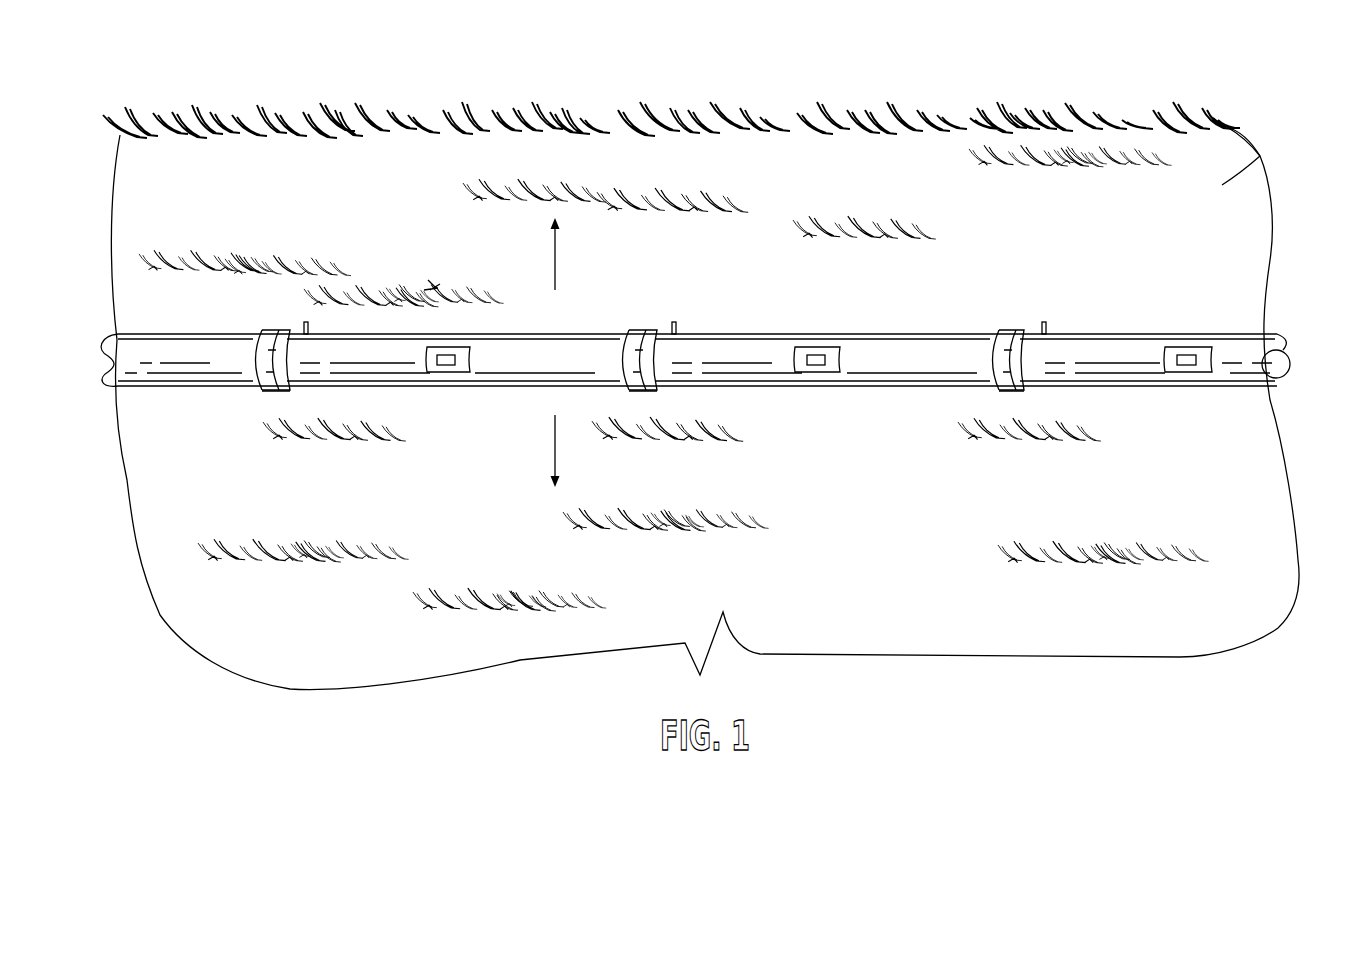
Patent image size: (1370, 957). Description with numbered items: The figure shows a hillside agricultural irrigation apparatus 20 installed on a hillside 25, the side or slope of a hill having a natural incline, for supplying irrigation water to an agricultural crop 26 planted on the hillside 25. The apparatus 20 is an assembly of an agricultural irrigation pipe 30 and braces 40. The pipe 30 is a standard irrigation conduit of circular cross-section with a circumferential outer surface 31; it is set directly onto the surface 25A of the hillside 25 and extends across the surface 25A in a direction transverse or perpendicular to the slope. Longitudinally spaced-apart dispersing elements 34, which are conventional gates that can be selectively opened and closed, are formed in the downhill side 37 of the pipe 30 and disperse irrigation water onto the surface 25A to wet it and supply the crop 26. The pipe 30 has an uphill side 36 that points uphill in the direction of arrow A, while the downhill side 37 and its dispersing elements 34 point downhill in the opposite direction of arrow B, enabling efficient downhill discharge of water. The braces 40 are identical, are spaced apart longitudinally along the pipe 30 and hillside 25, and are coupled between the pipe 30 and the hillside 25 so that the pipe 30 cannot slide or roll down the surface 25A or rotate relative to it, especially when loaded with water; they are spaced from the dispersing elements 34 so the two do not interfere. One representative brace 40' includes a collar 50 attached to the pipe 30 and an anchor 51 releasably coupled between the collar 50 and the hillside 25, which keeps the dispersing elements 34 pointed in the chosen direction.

The hillside agricultural irrigation apparatus 20 is at (992, 276).
The hillside 25 is at (1277, 232).
The surface of hillside 25A is at (1260, 156).
The agricultural crop 26 is at (338, 550).
The agricultural irrigation pipe 30 is at (152, 390).
The circumferential outer surface 31 is at (205, 348).
The dispersing elements 34 is at (445, 372).
The uphill side 36 is at (797, 328).
The downhill side 37 is at (905, 372).
The braces 40 is at (656, 280).
The brace 40' is at (679, 268).
The collar 50 is at (272, 390).
The anchor 51 is at (315, 328).
The arrow A is at (555, 268).
The arrow B is at (555, 448).